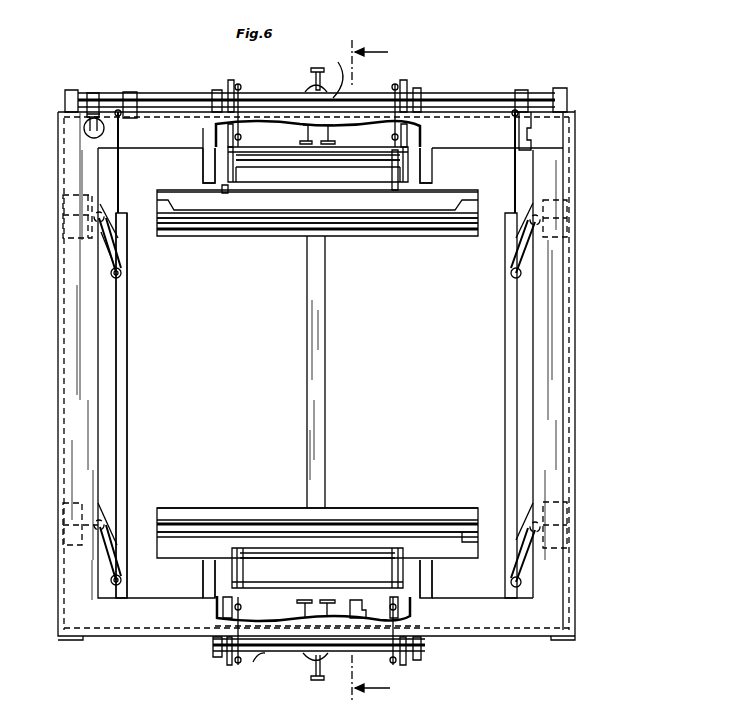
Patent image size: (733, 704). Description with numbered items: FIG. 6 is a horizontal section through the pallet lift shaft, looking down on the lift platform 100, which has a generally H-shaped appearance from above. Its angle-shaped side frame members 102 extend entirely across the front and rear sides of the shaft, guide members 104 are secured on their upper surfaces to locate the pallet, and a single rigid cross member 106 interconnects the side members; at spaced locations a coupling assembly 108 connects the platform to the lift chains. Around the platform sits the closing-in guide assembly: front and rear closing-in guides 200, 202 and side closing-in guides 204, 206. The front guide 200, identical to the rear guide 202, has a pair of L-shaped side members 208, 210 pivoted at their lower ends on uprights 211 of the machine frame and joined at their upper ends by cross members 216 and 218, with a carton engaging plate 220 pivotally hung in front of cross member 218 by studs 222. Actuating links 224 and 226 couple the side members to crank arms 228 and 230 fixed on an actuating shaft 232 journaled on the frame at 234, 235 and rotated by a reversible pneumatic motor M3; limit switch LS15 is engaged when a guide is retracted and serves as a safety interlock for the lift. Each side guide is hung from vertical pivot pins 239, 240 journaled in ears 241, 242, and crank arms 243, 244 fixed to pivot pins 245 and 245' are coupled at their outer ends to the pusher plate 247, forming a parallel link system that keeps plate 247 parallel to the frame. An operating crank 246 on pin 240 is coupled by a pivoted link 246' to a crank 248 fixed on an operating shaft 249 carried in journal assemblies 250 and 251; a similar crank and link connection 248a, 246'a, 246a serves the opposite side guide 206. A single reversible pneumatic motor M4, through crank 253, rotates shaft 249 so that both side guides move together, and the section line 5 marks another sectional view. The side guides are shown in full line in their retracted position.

The lift platform 100 is at (332, 309).
The side frame members 102 is at (278, 236).
The guide members 104 is at (373, 236).
The cross member 106 is at (307, 375).
The coupling assembly 108 is at (208, 153).
The front closing-in guide 200 is at (183, 236).
The rear closing-in guide 202 is at (200, 532).
The side closing-in guide 204 is at (127, 418).
The side closing-in guide 206 is at (505, 395).
The L-shaped side member 208 is at (245, 155).
The L-shaped side member 210 is at (392, 170).
The uprights 211 is at (233, 122).
The cross member 216 is at (298, 158).
The cross member 218 is at (325, 173).
The carton engaging plate 220 is at (407, 236).
The studs 222 is at (222, 195).
The actuating link 224 is at (250, 97).
The actuating link 226 is at (397, 88).
The crank arm 228 is at (238, 83).
The crank arm 230 is at (402, 88).
The actuating shaft 232 is at (338, 58).
The journal 234 is at (210, 97).
The journal 235 is at (422, 97).
The vertical pivot pin 239 is at (99, 525).
The vertical pivot pin 240 is at (97, 217).
The ear 241 is at (67, 537).
The ear 242 is at (62, 203).
The crank arm 243 is at (105, 555).
The crank arm 244 is at (107, 248).
The pivot pin 245 is at (339, 544).
The pivot pin 245' is at (70, 280).
The operating crank 246 is at (132, 224).
The pivoted link member 246' is at (141, 161).
The crank and link connection 246a is at (521, 220).
The link 246'a is at (562, 161).
The pusher plate 247 is at (127, 337).
The crank 248 is at (122, 98).
The crank 248a is at (517, 100).
The operating shaft 249 is at (152, 97).
The journal assembly 250 is at (67, 99).
The journal assembly 251 is at (568, 95).
The crank 253 is at (88, 125).
The reversible pneumatic motor M3 is at (310, 90).
The reversible pneumatic motor M4 is at (80, 133).
The limit switch LS15 is at (358, 602).
The section line 5 is at (379, 370).